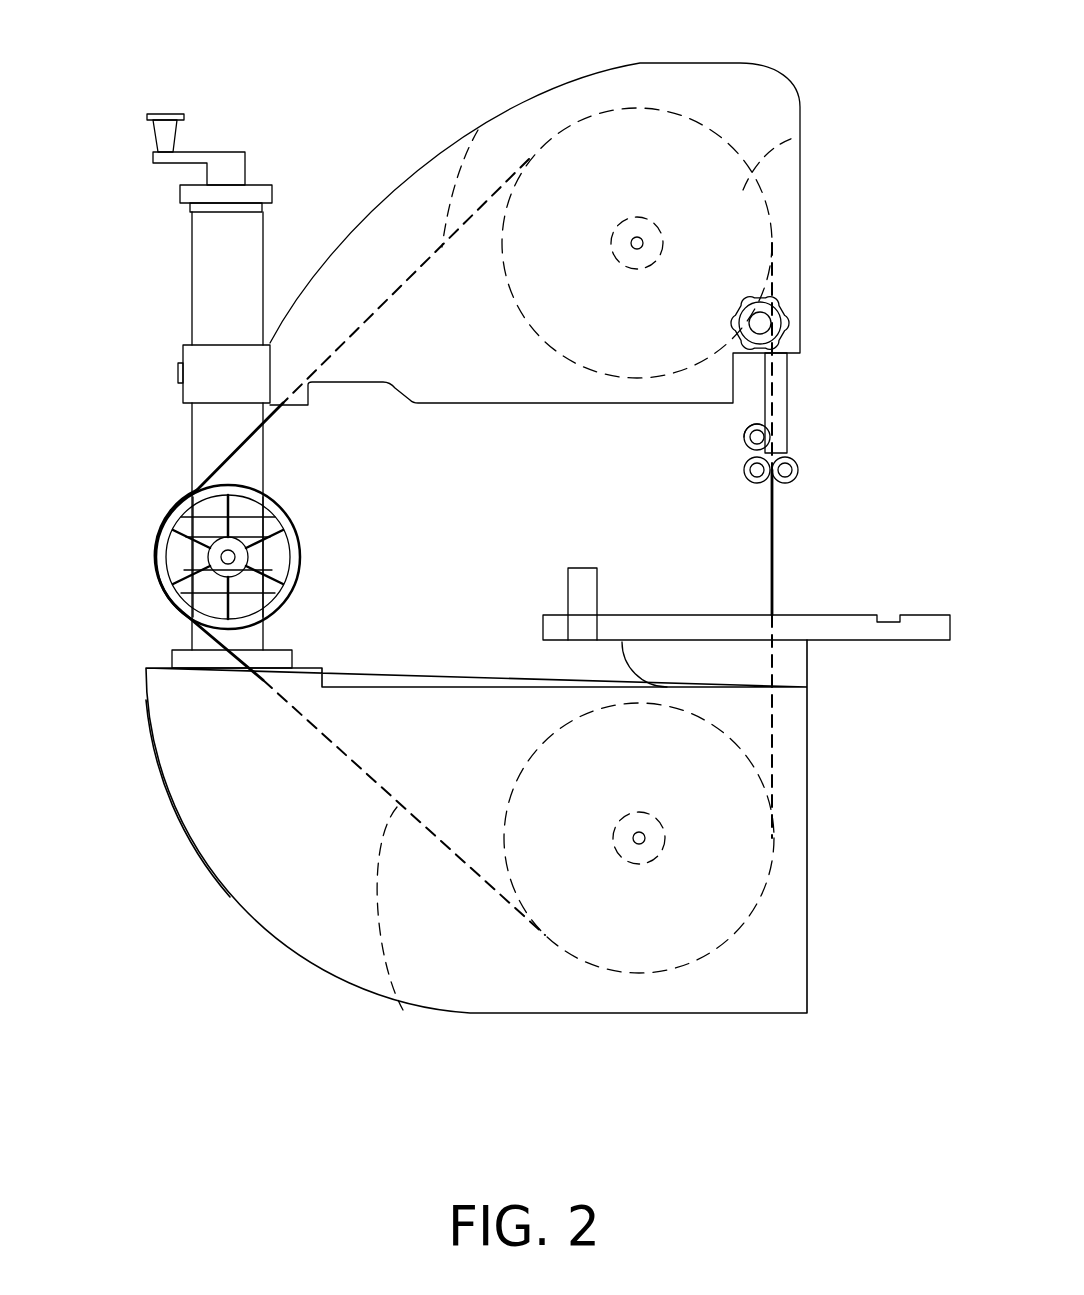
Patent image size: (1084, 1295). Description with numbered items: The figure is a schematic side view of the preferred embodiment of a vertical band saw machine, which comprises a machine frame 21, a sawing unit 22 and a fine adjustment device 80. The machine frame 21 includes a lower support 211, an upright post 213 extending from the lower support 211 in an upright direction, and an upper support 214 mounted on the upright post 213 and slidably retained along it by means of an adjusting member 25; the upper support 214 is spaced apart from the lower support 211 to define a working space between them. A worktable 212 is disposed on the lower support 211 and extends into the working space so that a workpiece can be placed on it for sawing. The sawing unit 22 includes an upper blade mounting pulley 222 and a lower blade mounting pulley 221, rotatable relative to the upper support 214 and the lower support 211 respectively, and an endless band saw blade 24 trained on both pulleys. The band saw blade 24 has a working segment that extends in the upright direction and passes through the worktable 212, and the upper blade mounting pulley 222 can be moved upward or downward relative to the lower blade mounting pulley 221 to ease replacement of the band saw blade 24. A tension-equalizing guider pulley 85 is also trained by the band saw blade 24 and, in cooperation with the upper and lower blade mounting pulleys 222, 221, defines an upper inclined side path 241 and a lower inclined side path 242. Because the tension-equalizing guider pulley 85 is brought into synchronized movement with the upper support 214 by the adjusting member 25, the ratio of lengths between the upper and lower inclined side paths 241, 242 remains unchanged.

The machine frame 21 is at (278, 940).
The lower support 211 is at (277, 878).
The worktable 212 is at (940, 620).
The upright post 213 is at (200, 425).
The upper support 214 is at (407, 190).
The sawing unit 22 is at (598, 967).
The lower blade mounting pulley 221 is at (667, 937).
The upper blade mounting pulley 222 is at (800, 137).
The band saw blade 24 is at (775, 530).
The upper inclined side path 241 is at (478, 130).
The lower inclined side path 242 is at (402, 1013).
The adjusting member 25 is at (228, 150).
The fine adjustment device 80 is at (157, 533).
The tension-equalizing guider pulley 85 is at (163, 563).